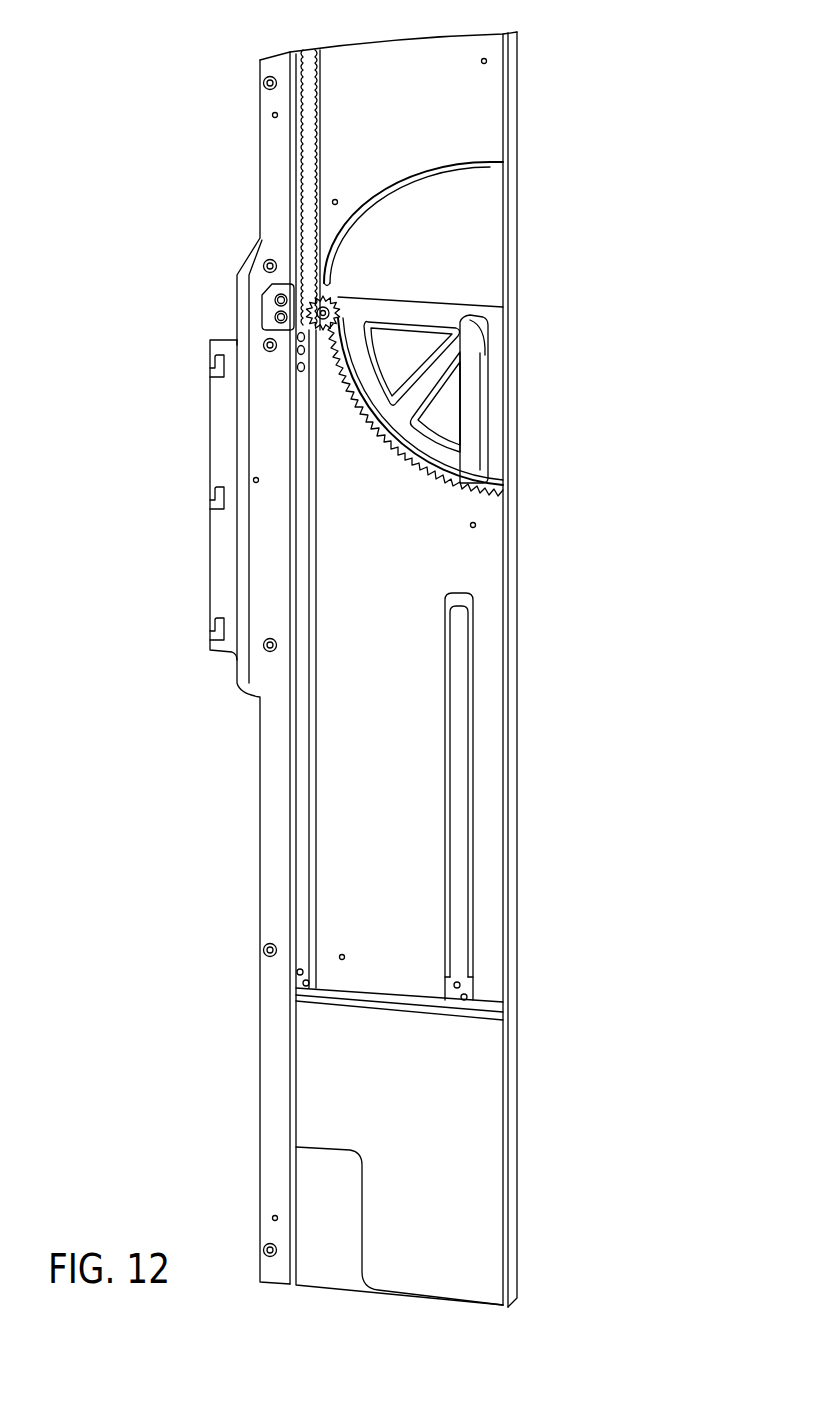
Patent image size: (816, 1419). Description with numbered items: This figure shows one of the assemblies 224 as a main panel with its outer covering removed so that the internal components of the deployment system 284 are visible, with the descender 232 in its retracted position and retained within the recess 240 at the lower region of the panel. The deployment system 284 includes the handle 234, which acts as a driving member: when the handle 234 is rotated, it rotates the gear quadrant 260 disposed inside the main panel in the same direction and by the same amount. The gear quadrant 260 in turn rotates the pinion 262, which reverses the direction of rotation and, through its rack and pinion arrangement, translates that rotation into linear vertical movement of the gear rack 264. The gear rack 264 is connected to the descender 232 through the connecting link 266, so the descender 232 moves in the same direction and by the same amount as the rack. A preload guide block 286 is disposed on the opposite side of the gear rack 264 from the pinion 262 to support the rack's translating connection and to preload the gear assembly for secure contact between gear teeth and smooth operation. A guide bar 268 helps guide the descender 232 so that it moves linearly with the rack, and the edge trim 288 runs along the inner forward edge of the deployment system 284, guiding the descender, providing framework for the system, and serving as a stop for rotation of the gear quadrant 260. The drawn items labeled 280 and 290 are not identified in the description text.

The assembly 224 is at (655, 460).
The descender 232 is at (487, 1185).
The handle 234 is at (470, 385).
The recess 240 is at (486, 1097).
The gear quadrant 260 is at (420, 308).
The pinion 262 is at (333, 297).
The gear rack 264 is at (300, 188).
The connecting link 266 is at (300, 781).
The guide bar 268 is at (460, 763).
The mounting bracket 280 is at (220, 502).
The deployment system 284 is at (216, 331).
The preload guide block 286 is at (268, 303).
The edge trim 288 is at (513, 620).
The outer flange 290 is at (524, 553).